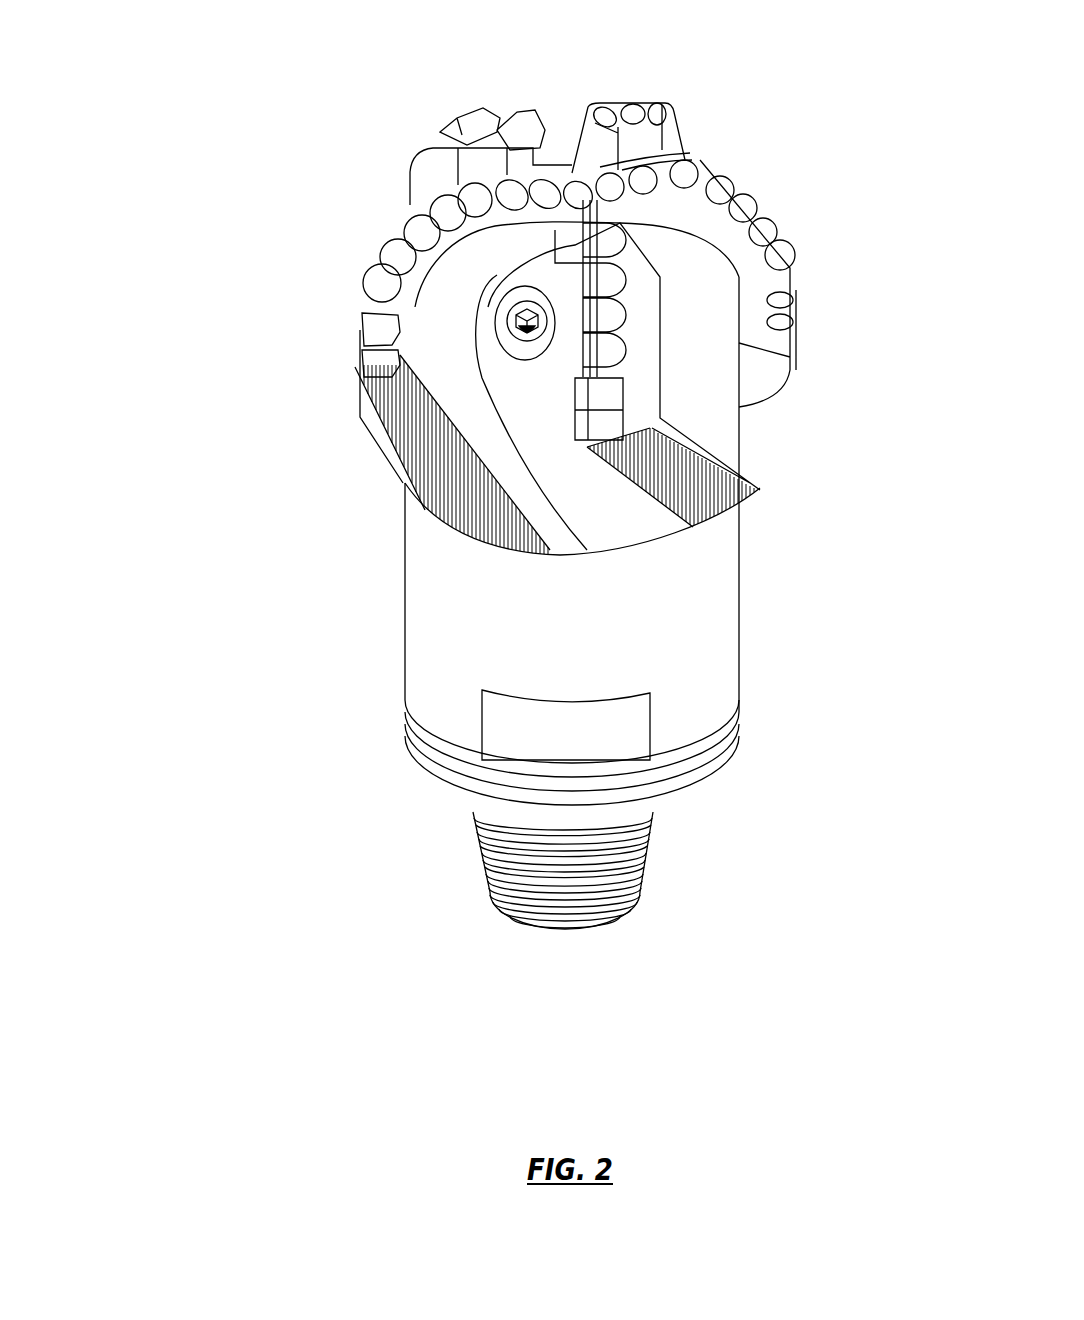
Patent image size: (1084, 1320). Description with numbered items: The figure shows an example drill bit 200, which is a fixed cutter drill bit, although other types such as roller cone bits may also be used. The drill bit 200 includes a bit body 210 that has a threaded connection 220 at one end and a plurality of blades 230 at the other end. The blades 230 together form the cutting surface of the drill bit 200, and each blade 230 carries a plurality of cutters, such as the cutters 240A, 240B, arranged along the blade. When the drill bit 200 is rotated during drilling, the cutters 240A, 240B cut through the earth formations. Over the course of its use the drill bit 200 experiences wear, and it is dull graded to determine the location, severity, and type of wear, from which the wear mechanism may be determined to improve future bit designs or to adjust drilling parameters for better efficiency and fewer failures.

The drill bit 200 is at (222, 118).
The bit body 210 is at (408, 605).
The threaded connection 220 is at (503, 867).
The blade 230 is at (447, 305).
The cutter 240A is at (783, 250).
The cutter 240B is at (727, 190).